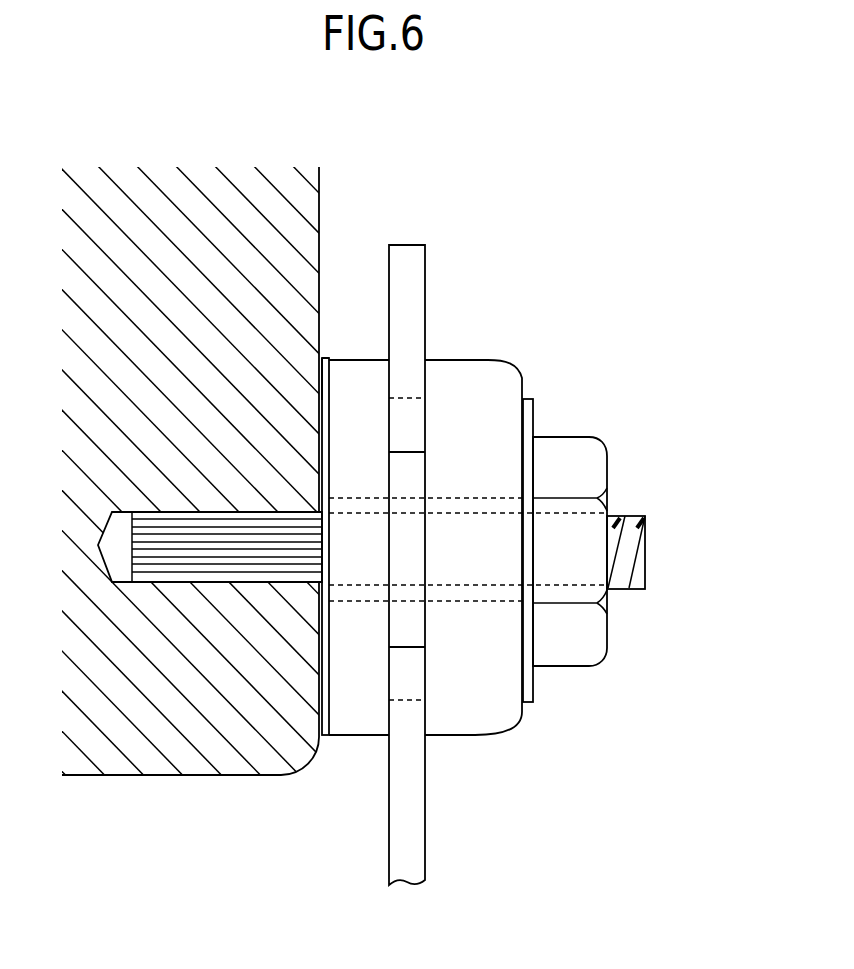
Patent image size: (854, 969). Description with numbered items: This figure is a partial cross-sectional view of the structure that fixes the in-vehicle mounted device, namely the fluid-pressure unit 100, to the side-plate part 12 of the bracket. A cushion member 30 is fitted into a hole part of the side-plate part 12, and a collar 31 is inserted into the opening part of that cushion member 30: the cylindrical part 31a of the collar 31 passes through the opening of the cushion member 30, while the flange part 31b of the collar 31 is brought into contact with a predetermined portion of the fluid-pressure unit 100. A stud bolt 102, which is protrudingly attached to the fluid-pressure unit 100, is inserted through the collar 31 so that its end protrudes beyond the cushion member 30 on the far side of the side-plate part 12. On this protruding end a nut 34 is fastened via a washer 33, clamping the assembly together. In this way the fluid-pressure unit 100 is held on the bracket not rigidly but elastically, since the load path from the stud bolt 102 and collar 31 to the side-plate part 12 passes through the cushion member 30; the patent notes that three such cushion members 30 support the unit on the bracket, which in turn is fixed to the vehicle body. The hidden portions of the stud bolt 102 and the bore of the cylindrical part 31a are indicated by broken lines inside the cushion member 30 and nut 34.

The fluid-pressure unit 100 is at (150, 760).
The stud bolt 102 is at (632, 557).
The side-plate part 12 is at (408, 250).
The cushion member 30 is at (500, 380).
The collar 31 is at (325, 757).
The cylindrical part 31a is at (460, 597).
The flange part 31b is at (322, 358).
The washer 33 is at (529, 703).
The nut 34 is at (565, 447).